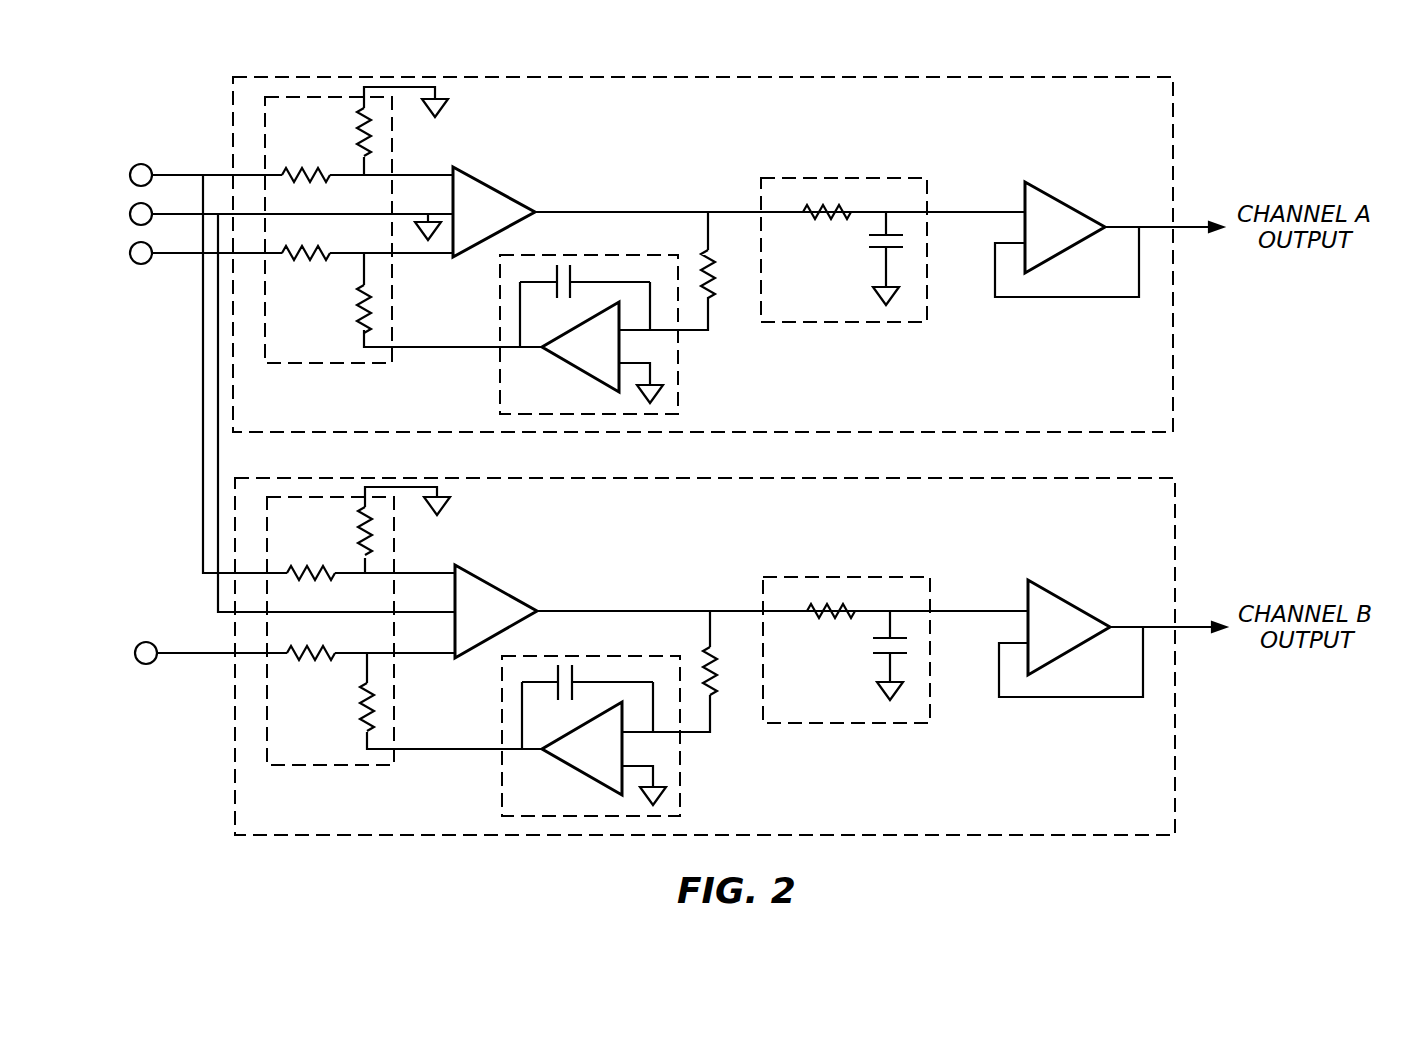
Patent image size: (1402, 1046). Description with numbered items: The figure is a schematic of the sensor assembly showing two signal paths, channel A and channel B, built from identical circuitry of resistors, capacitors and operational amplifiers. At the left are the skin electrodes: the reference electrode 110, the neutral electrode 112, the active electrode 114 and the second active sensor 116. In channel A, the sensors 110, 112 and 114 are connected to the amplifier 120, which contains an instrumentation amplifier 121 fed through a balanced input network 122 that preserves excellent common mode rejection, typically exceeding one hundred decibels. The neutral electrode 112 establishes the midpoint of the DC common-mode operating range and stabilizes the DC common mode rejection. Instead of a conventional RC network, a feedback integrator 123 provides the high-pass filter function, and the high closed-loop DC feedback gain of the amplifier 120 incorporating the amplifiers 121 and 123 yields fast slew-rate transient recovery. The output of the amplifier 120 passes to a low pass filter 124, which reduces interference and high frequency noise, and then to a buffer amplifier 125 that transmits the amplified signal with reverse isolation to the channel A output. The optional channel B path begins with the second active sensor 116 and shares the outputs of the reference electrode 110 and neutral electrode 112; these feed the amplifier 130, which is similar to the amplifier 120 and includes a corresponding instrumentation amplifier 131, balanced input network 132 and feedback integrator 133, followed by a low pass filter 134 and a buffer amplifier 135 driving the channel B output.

The reference electrode 110 is at (268, 361).
The neutral electrode 112 is at (268, 400).
The active electrode 114 is at (267, 252).
The second active sensor 116 is at (270, 640).
The amplifier 120 is at (580, 76).
The instrumentation amplifier 121 is at (739, 211).
The balanced input network 122 is at (317, 364).
The feedback integrator 123 is at (553, 255).
The low pass filter 124 is at (846, 177).
The buffer amplifier 125 is at (1109, 235).
The amplifier 130 is at (440, 837).
The instrumentation amplifier 131 is at (741, 611).
The balanced input network 132 is at (319, 767).
The feedback integrator 133 is at (553, 655).
The low pass filter 134 is at (848, 577).
The buffer amplifier 135 is at (1112, 638).